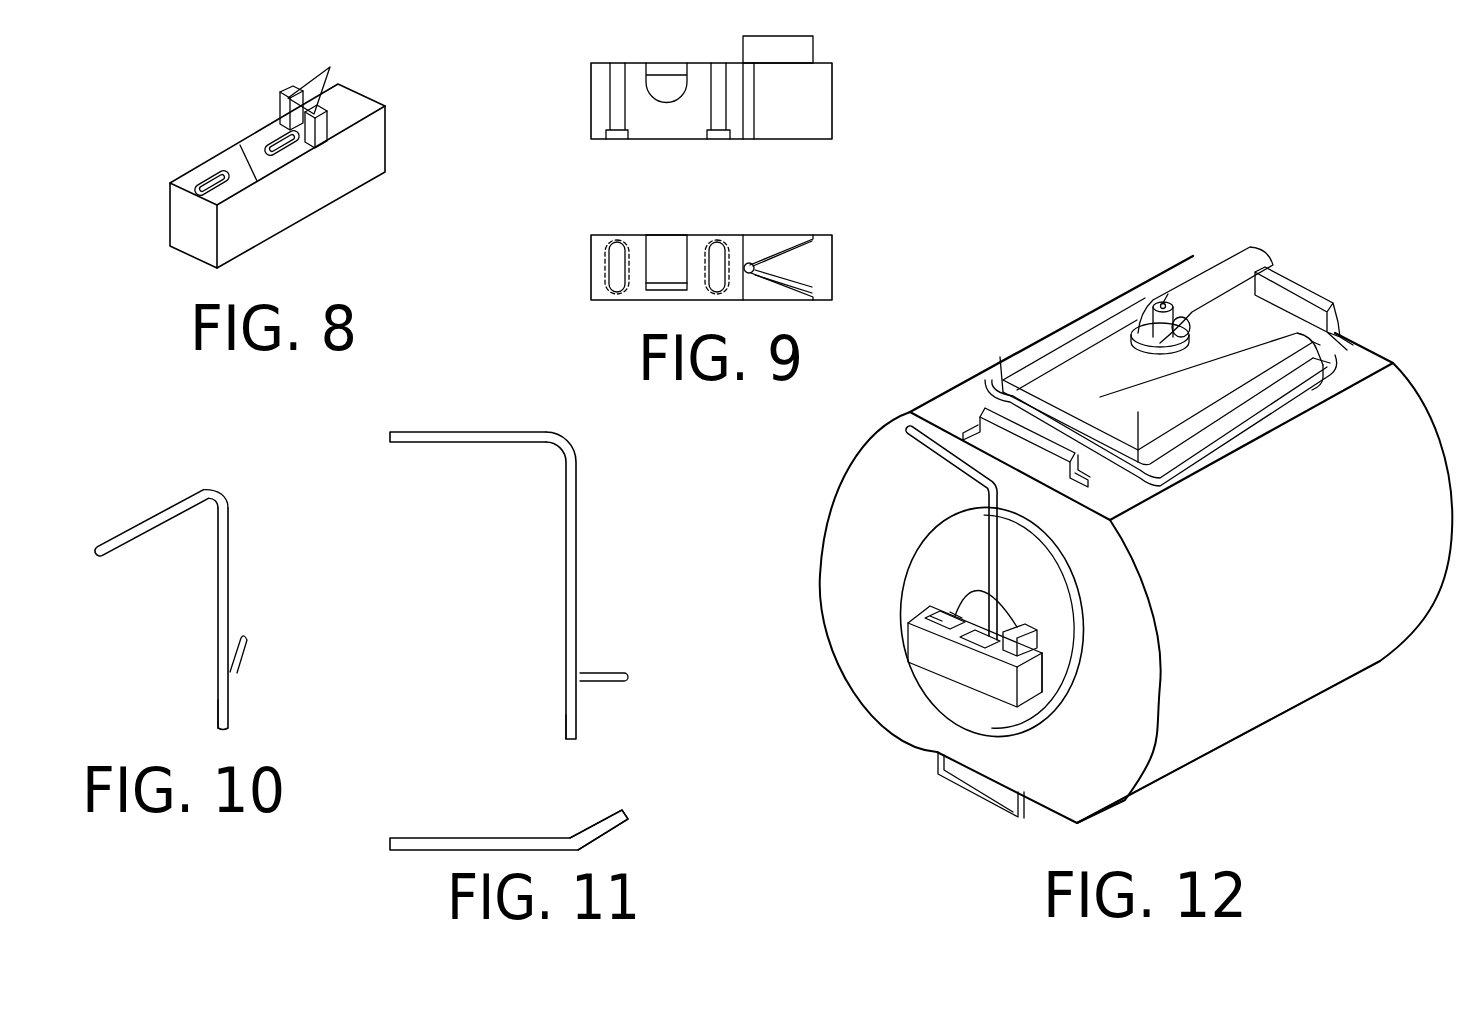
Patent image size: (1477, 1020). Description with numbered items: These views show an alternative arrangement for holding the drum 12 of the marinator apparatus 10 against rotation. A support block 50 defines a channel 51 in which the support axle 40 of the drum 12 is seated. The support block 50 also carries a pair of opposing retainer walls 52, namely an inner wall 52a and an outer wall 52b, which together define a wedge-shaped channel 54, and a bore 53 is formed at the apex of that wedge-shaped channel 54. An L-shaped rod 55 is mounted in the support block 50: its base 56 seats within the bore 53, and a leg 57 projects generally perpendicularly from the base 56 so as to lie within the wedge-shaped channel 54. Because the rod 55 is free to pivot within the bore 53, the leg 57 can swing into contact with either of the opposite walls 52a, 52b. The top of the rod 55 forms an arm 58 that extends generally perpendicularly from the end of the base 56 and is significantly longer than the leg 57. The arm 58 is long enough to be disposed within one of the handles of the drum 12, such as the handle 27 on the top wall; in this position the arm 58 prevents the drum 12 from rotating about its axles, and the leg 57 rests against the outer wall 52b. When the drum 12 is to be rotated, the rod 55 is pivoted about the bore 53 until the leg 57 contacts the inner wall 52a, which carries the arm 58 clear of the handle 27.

In FIG. 12, the marinator apparatus 10 is at (1223, 750).
In FIG. 12, the drum 12 is at (1307, 662).
In FIG. 12, the handle 27 is at (1017, 417).
In FIG. 12, the support axle 40 is at (1000, 613).
In FIG. 8, the support block 50 is at (170, 183).
In FIG. 9, the support block 50 is at (823, 92).
In FIG. 12, the support block 50 is at (1010, 693).
In FIG. 8, the channel 51 is at (237, 153).
In FIG. 9, the channel 51 is at (678, 85).
In FIG. 9, the retainer walls 52 is at (795, 50).
In FIG. 8, the inner retainer wall 52a is at (308, 85).
In FIG. 8, the outer retainer wall 52b is at (362, 98).
In FIG. 9, the bore 53 is at (750, 123).
In FIG. 8, the wedge-shaped channel 54 is at (320, 110).
In FIG. 9, the wedge-shaped channel 54 is at (807, 262).
In FIG. 10, the L-shaped rod 55 is at (228, 577).
In FIG. 11, the L-shaped rod 55 is at (568, 610).
In FIG. 10, the base 56 is at (222, 702).
In FIG. 11, the base 56 is at (568, 715).
In FIG. 10, the leg 57 is at (240, 648).
In FIG. 11, the leg 57 is at (594, 675).
In FIG. 12, the leg 57 is at (1040, 655).
In FIG. 10, the arm 58 is at (137, 530).
In FIG. 11, the arm 58 is at (465, 434).
In FIG. 12, the arm 58 is at (927, 432).